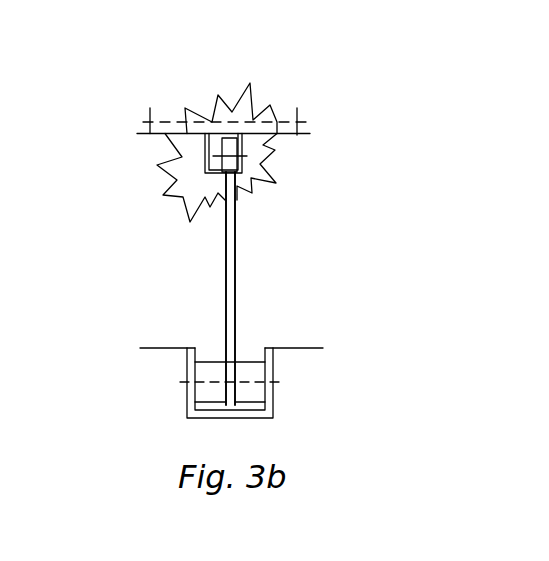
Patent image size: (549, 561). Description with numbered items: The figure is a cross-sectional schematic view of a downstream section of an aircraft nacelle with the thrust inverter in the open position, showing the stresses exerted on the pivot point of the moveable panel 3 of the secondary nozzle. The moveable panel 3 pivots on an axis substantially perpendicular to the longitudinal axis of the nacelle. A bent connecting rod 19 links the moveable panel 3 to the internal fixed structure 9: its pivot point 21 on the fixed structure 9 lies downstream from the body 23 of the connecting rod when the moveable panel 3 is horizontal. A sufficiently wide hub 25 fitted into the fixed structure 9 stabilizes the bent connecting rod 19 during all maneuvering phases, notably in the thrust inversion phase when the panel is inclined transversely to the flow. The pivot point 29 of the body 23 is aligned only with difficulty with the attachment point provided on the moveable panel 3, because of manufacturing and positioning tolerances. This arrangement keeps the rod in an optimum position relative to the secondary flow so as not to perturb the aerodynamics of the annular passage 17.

The moveable panel 3 is at (277, 122).
The pivot point 29 is at (268, 152).
The body of the connecting rod 23 is at (223, 248).
The bent connecting rod 19 is at (243, 295).
The annular passage 17 is at (178, 297).
The internal fixed structure 9 is at (172, 393).
The pivot point 21 is at (277, 380).
The hub 25 is at (248, 360).